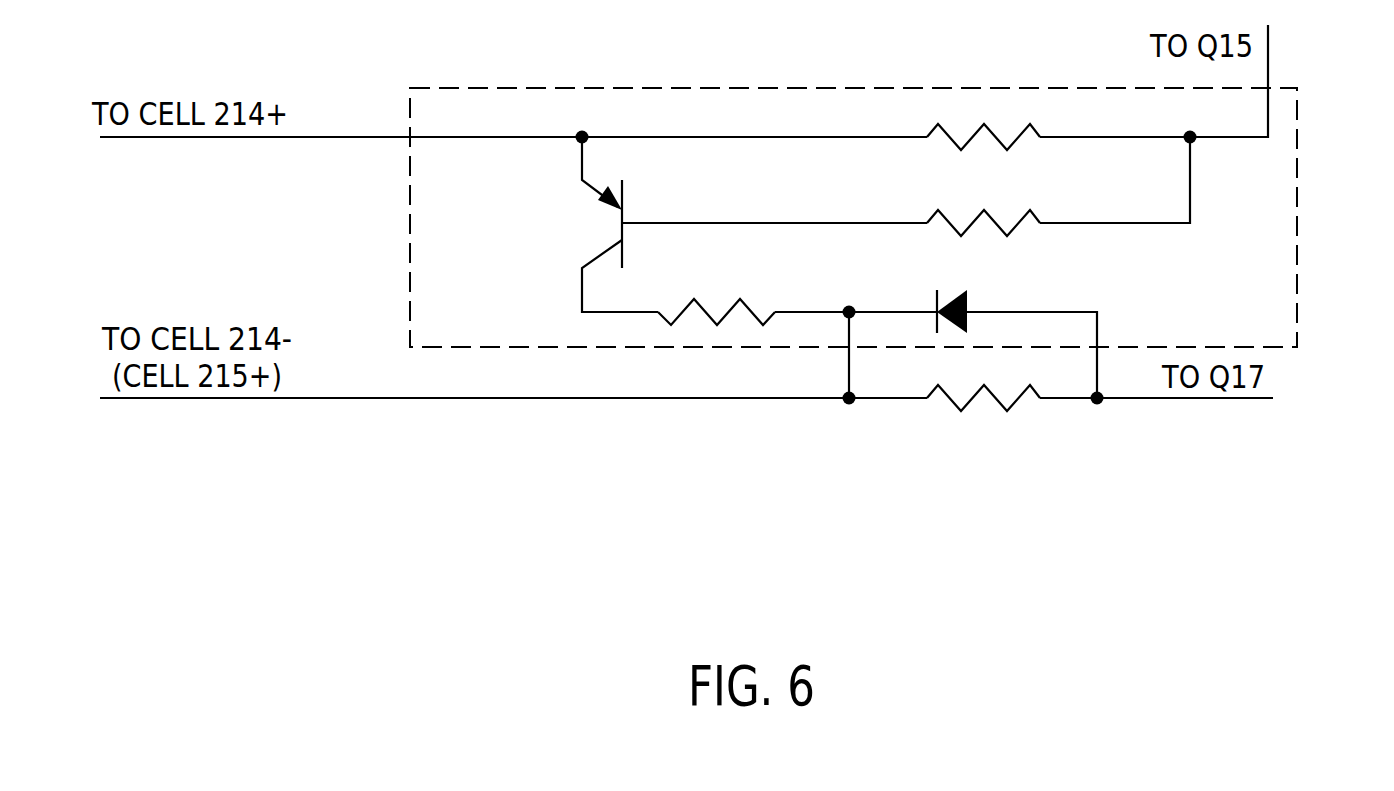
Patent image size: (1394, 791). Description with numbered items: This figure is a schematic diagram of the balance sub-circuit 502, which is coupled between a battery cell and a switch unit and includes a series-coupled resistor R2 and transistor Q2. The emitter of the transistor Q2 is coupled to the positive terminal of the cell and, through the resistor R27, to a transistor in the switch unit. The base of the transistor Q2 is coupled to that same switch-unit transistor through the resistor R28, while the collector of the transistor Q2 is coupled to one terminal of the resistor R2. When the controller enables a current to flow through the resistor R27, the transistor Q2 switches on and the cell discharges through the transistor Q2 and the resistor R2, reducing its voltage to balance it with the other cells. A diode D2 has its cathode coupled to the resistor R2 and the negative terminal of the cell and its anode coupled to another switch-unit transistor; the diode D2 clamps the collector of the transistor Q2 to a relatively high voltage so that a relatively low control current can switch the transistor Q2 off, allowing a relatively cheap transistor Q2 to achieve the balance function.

The balance sub-circuit 502 is at (1297, 113).
The transistor Q2 is at (737, 224).
The resistor R2 is at (716, 296).
The resistor R27 is at (983, 120).
The resistor R28 is at (983, 207).
The diode D2 is at (972, 300).